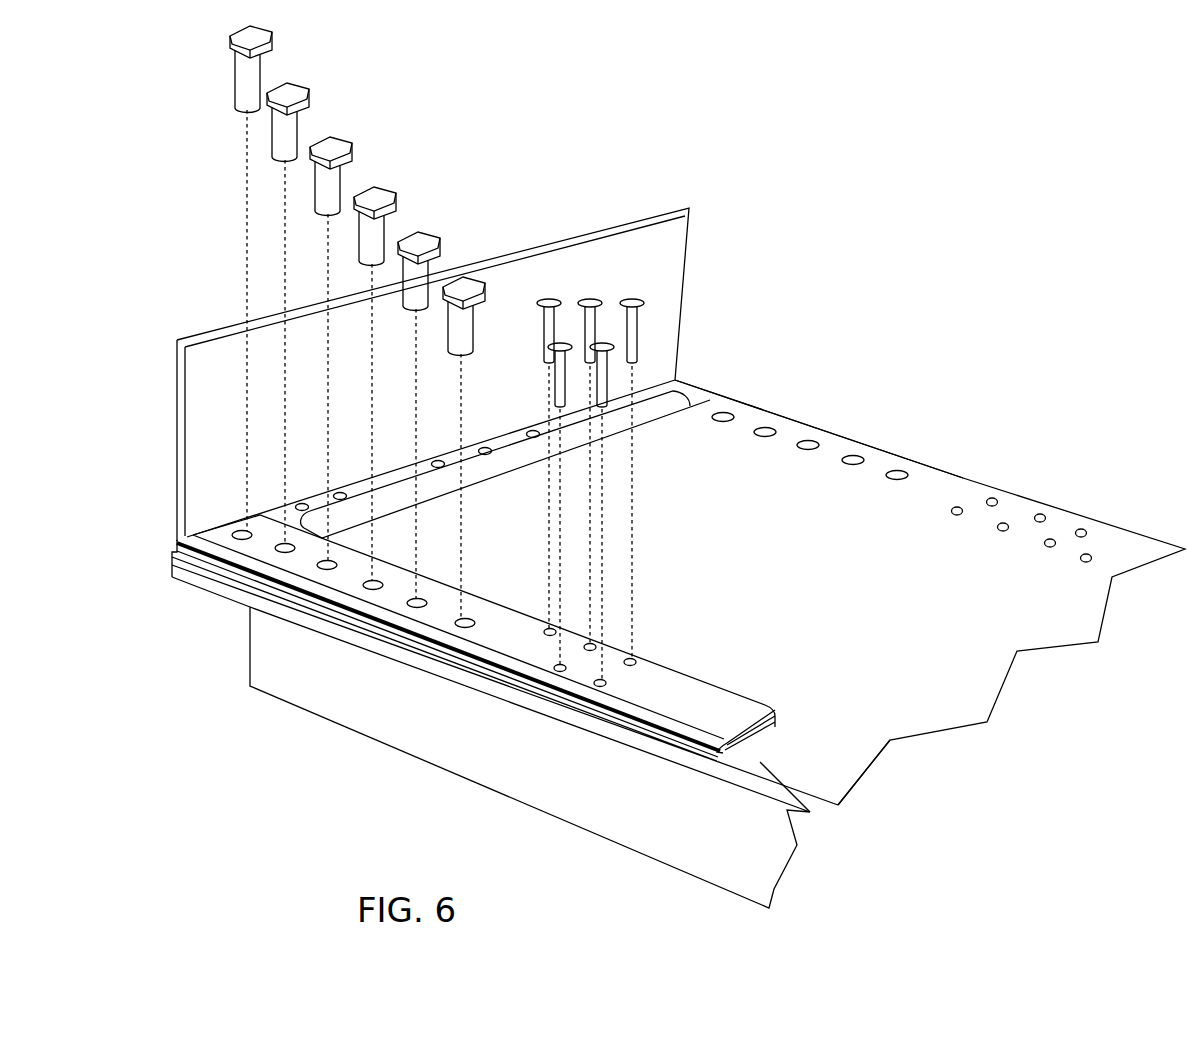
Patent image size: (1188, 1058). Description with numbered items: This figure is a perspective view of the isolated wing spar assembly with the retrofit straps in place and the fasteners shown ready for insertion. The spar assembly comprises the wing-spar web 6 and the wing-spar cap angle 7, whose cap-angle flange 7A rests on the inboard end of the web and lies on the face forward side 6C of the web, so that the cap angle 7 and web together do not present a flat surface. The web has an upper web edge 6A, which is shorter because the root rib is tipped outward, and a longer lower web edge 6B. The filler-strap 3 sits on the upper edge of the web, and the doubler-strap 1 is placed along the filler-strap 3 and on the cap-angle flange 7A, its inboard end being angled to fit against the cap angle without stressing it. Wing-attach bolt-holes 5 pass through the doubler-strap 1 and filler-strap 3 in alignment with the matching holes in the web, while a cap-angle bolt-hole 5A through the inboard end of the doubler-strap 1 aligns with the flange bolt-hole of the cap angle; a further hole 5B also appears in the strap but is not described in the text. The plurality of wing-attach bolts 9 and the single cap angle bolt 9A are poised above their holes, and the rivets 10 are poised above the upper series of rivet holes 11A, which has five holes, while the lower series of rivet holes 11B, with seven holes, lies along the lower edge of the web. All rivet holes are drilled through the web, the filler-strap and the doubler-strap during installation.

The doubler-strap 1 is at (517, 643).
The filler-strap 3 is at (500, 640).
The wing-attach bolt-holes 5 is at (282, 552).
The cap-angle bolt-hole 5A is at (248, 562).
The bolt hole in mounting bar 5B is at (445, 622).
The wing-spar web 6 is at (807, 490).
The upper web edge 6A is at (787, 757).
The lower web edge 6B is at (742, 403).
The face forward side 6C is at (843, 662).
The wing-spar cap angle 7 is at (192, 400).
The cap-angle flange 7A is at (277, 513).
The wing-attach bolts 9 is at (477, 273).
The cap angle bolt 9A is at (243, 53).
The rivets 10 is at (648, 305).
The upper series of rivet holes 11A is at (600, 687).
The lower series of rivet holes 11B is at (1082, 529).